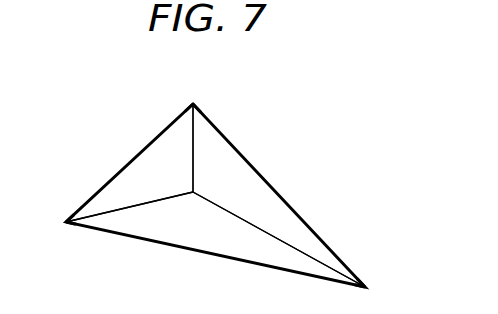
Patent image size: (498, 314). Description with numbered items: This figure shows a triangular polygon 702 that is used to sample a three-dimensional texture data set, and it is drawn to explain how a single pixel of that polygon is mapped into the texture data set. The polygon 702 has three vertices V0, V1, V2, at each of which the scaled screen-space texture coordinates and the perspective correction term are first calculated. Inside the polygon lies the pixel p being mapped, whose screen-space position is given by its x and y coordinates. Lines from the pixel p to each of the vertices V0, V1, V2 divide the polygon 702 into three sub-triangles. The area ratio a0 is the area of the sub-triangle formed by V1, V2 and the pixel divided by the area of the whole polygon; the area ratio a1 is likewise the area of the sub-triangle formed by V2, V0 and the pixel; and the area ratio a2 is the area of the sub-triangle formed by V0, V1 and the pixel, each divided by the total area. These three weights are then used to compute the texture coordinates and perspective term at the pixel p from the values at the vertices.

The polygon 702 is at (258, 173).
The first vertex V0 is at (55, 225).
The second vertex V1 is at (192, 91).
The third vertex V2 is at (373, 287).
The pixel p is at (183, 179).
The area ratio a0 is at (279, 195).
The area ratio a1 is at (215, 239).
The area ratio a2 is at (129, 163).